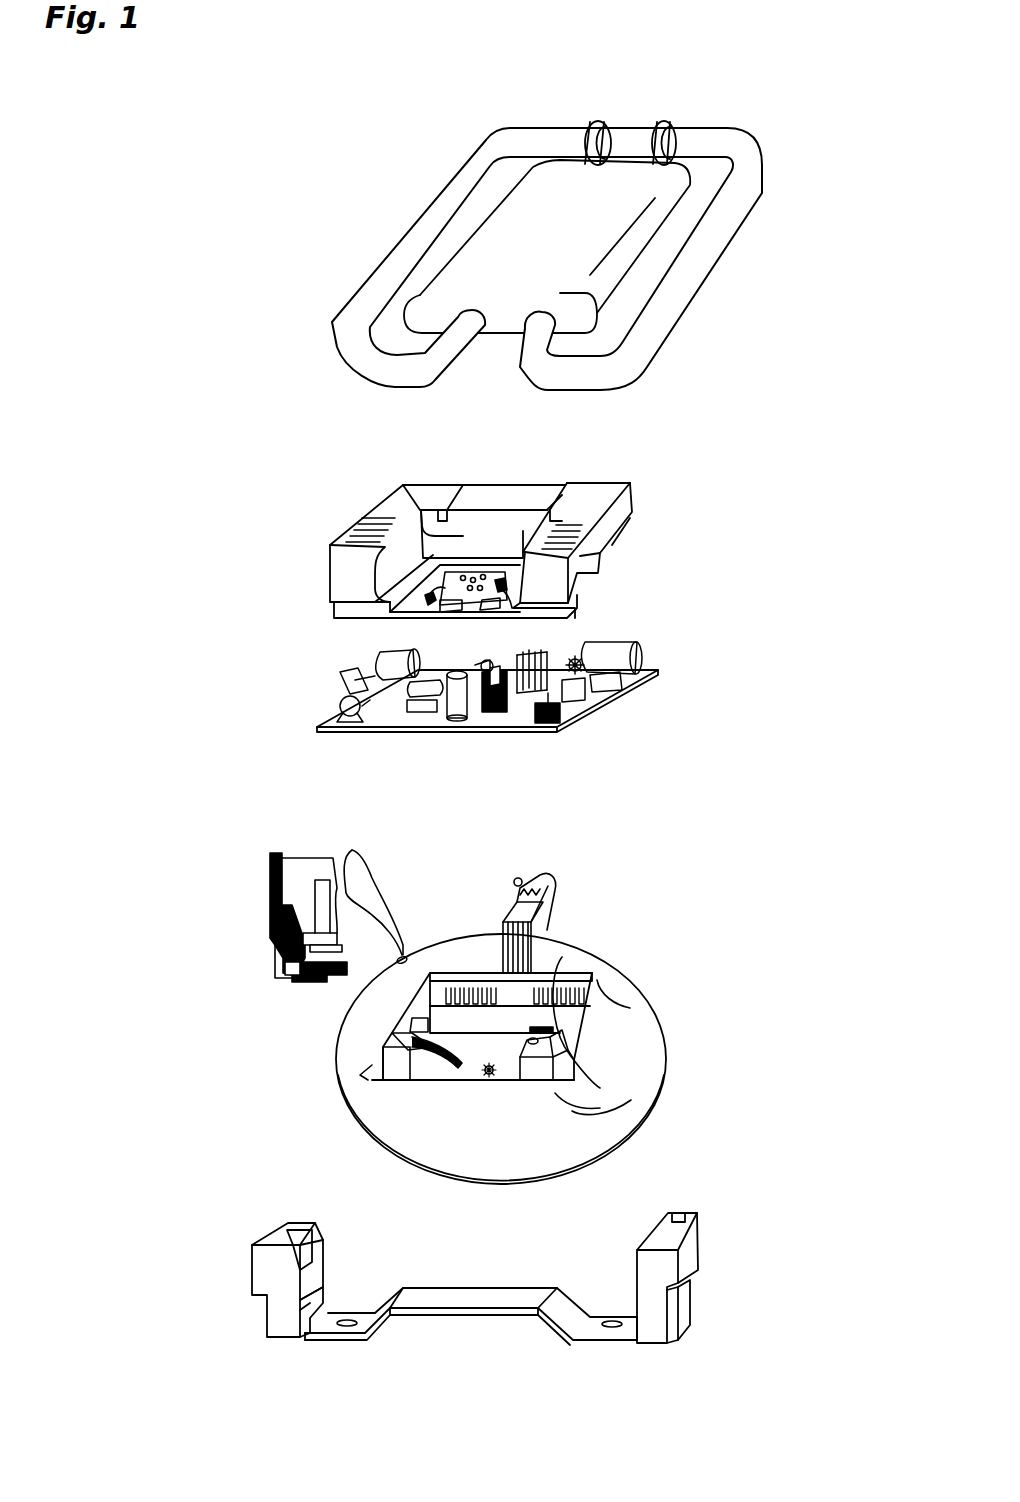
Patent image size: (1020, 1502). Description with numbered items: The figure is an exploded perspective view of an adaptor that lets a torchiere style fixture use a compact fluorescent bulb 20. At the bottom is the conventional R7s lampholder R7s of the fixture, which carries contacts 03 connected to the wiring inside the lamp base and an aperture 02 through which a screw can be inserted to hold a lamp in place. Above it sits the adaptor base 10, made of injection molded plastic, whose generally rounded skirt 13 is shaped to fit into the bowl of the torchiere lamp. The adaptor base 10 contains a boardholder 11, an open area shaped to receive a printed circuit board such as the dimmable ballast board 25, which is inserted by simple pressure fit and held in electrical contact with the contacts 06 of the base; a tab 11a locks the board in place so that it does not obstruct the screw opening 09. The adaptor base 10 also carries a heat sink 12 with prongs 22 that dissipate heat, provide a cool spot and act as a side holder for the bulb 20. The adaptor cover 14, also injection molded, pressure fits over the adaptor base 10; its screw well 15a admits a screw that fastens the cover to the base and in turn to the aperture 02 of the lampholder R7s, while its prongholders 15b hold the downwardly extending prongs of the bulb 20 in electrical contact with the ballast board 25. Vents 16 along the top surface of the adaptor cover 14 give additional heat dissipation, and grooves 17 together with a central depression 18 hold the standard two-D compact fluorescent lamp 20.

The compact fluorescent bulb 20 is at (453, 167).
The adaptor cover 14 is at (337, 528).
The vents 16 is at (367, 532).
The grooves 17 is at (470, 480).
The central depression 18 is at (405, 487).
The screw well 15a is at (440, 612).
The prongholders 15b is at (513, 610).
The dimmable ballast board 25 is at (620, 707).
The adaptor base 10 is at (337, 1040).
The rounded skirt 13 is at (667, 1050).
The boardholder 11 is at (592, 1003).
The contacts 06 is at (608, 945).
The screw opening 09 is at (490, 1079).
The heat sink 12 is at (545, 932).
The prongs 22 is at (538, 873).
The tab 11a is at (271, 891).
The aperture 02 is at (470, 1297).
The contacts 03 is at (320, 1312).
The R7s lampholder R7s is at (248, 1280).